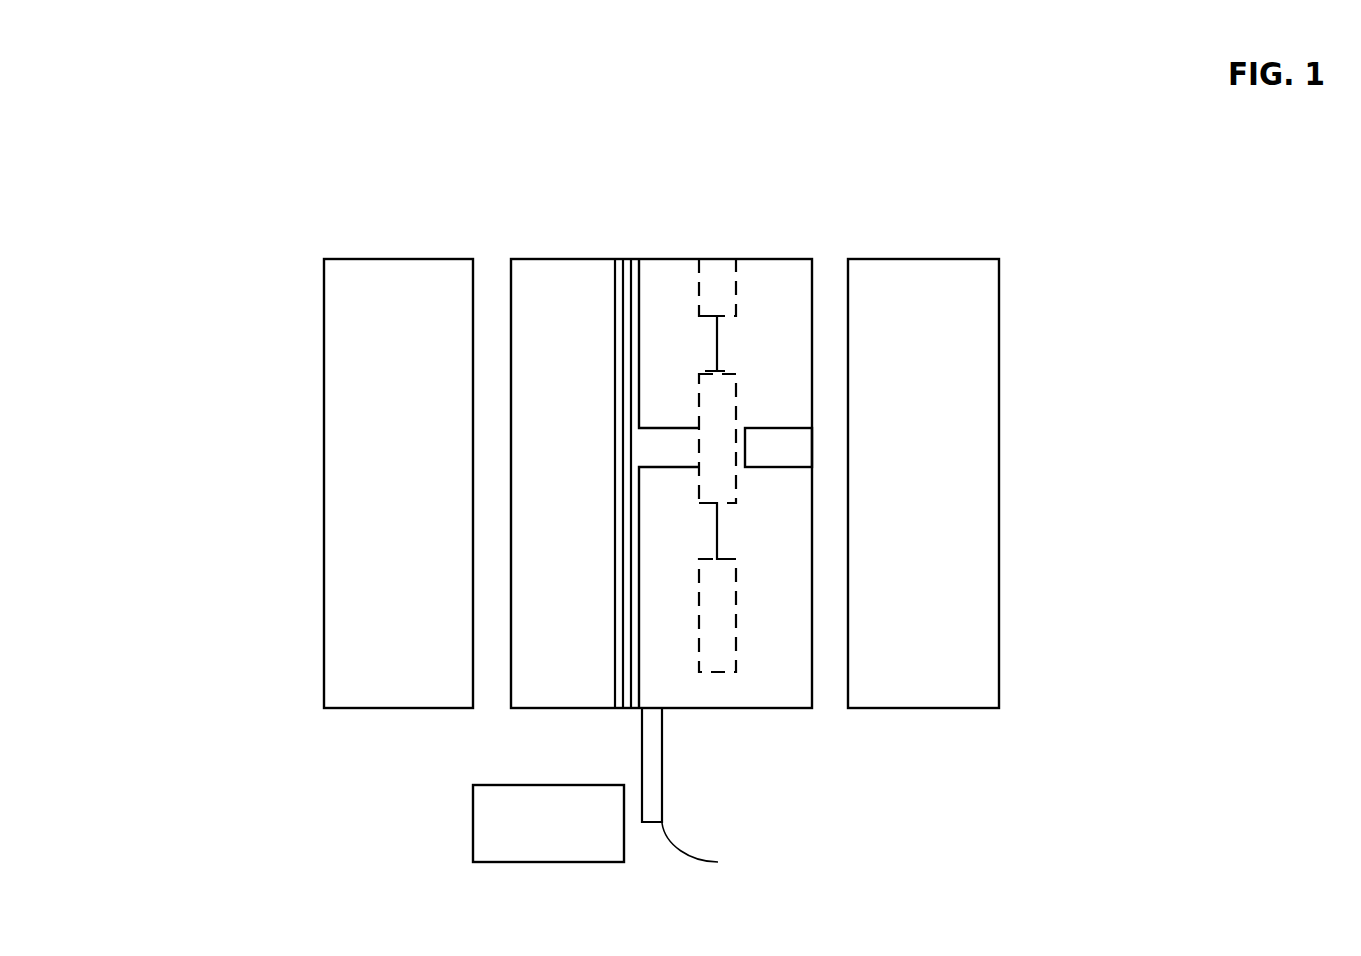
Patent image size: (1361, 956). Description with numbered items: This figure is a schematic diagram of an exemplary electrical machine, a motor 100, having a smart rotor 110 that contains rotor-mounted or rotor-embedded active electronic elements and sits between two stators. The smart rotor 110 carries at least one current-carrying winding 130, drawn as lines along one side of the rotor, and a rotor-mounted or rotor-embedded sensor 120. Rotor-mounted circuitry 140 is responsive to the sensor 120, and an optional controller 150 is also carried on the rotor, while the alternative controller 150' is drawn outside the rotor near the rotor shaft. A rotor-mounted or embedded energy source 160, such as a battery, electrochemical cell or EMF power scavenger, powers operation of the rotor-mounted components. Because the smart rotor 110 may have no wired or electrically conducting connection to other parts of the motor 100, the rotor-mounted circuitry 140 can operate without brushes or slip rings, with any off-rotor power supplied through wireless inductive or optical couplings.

The motor 100 is at (152, 252).
The smart rotor 110 is at (588, 520).
The sensor 120 is at (718, 259).
The winding 130 is at (625, 259).
The rotor-mounted circuitry 140 is at (737, 411).
The controller 150 is at (751, 603).
The controller 150' is at (548, 823).
The energy source 160 is at (812, 425).